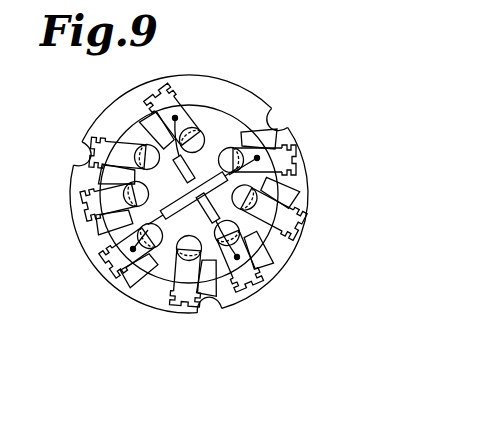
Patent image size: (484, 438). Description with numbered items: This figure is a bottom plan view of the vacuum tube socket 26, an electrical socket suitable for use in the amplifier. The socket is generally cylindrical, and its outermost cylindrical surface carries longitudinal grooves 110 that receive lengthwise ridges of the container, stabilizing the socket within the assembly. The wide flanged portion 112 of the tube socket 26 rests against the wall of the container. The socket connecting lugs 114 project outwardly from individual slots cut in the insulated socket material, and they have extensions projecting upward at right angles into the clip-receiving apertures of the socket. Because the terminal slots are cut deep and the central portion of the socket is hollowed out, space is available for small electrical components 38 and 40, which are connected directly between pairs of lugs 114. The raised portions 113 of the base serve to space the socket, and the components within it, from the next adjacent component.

The vacuum tube socket 26 is at (258, 96).
The longitudinal grooves 110 is at (279, 123).
The wide flanged portion 112 is at (122, 288).
The raised portions of the base 113 is at (267, 183).
The socket connecting lugs 114 is at (171, 100).
The small electrical component 38 is at (194, 203).
The small electrical component 40 is at (188, 183).